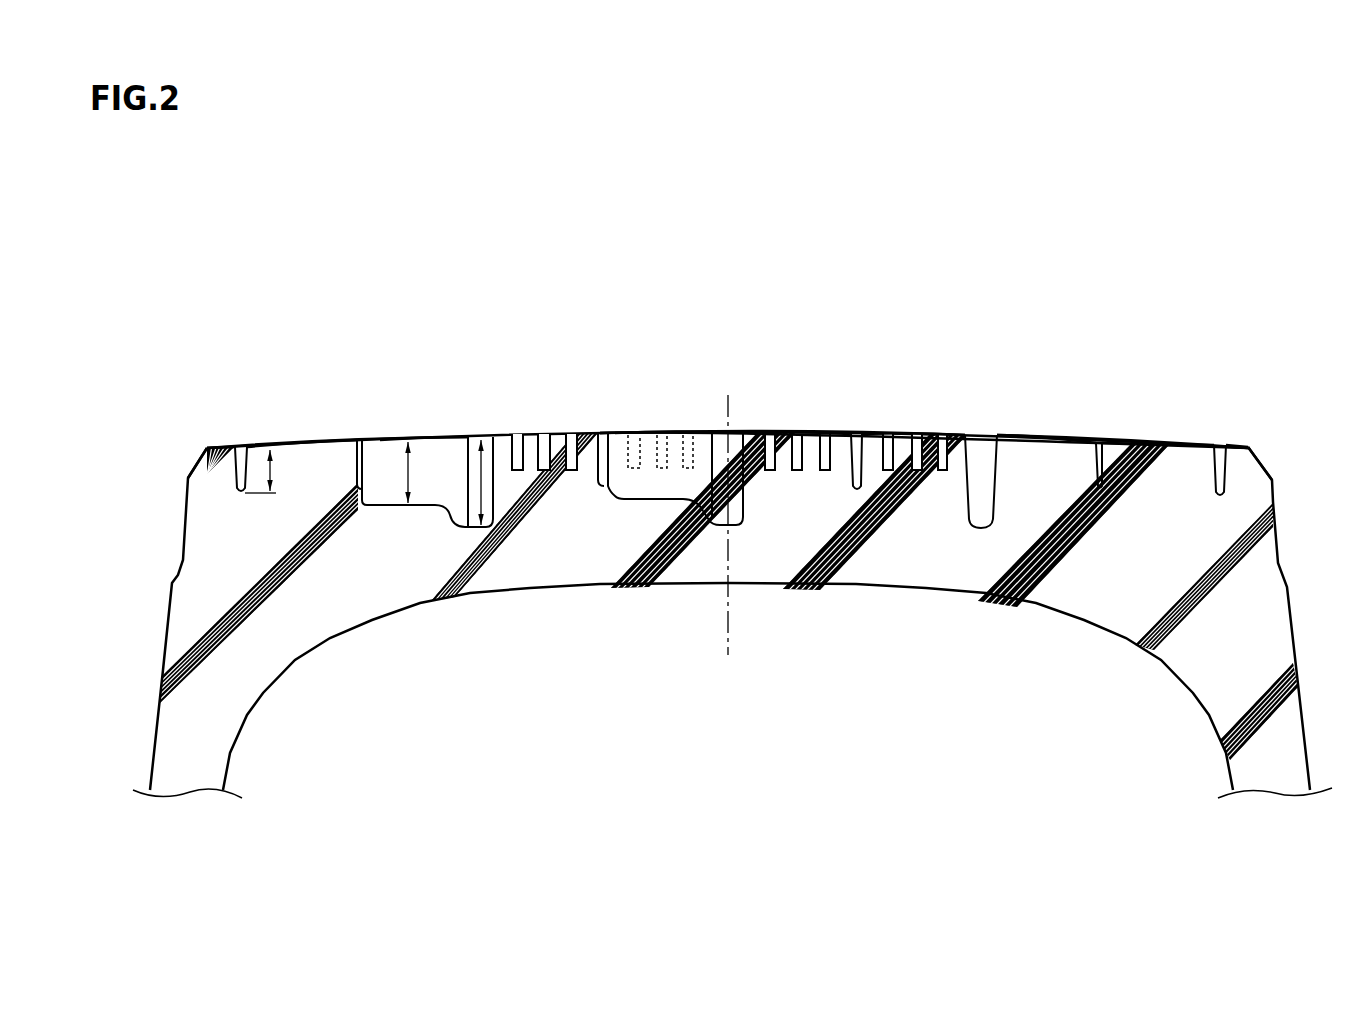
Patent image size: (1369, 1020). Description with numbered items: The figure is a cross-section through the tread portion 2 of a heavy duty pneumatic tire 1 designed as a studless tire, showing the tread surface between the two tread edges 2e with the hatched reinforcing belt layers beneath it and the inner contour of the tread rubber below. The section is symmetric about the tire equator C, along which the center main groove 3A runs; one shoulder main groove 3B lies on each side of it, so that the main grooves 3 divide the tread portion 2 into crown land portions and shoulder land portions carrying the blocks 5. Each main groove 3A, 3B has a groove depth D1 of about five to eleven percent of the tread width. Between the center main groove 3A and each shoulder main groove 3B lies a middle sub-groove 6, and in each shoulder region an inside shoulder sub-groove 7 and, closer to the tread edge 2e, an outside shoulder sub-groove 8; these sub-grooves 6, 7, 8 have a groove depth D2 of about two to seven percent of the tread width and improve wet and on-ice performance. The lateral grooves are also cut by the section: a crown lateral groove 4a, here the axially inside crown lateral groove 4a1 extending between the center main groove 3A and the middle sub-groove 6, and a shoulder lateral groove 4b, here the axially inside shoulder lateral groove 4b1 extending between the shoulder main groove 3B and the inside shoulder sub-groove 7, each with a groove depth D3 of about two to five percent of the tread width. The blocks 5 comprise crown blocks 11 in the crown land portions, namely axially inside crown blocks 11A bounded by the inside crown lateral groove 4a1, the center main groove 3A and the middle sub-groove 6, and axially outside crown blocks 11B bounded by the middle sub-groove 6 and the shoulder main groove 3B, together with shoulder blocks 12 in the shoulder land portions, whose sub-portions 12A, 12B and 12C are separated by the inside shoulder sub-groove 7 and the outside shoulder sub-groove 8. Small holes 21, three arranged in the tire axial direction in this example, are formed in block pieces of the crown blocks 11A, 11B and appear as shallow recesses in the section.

The heavy duty pneumatic tire 1 is at (1278, 238).
The tread portion 2 is at (1214, 262).
The tread edge 2e is at (209, 446).
The main groove 3 is at (714, 424).
The center main groove 3A is at (723, 479).
The shoulder main groove 3B is at (983, 445).
The crown lateral groove 4a is at (644, 585).
The axially inside crown lateral groove 4a1 is at (626, 497).
The shoulder lateral groove 4b is at (405, 589).
The axially inside shoulder lateral groove 4b1 is at (373, 505).
The block 5 is at (924, 344).
The middle sub-groove 6 is at (600, 440).
The inside shoulder sub-groove 7 is at (359, 440).
The outside shoulder sub-groove 8 is at (235, 447).
The crown block 11 is at (934, 292).
The axially inside crown block 11A is at (652, 432).
The axially outside crown block 11B is at (913, 432).
The shoulder block 12 is at (1277, 292).
The shoulder land sub-portion 12A is at (427, 438).
The shoulder land sub-portion 12B is at (322, 440).
The shoulder land sub-portion 12C is at (222, 445).
The small hole 21 is at (516, 436).
The groove depth of main grooves D1 is at (506, 564).
The groove depth of sub-grooves D2 is at (270, 462).
The groove depth of lateral grooves D3 is at (407, 492).
The tire equator C is at (730, 540).